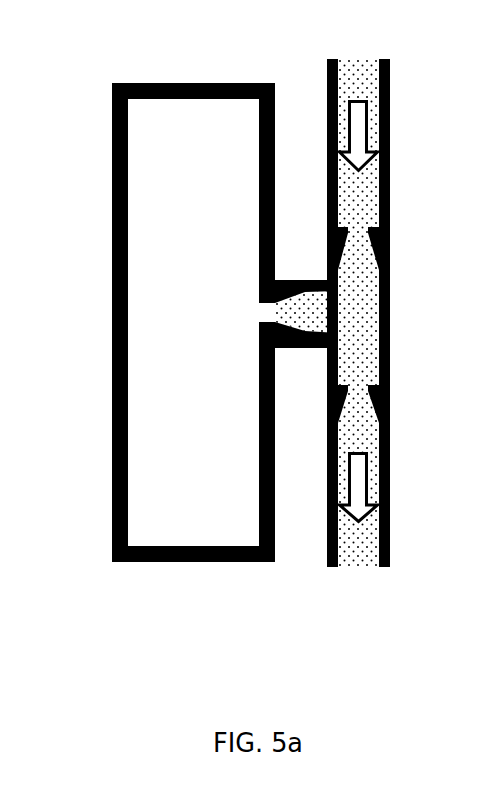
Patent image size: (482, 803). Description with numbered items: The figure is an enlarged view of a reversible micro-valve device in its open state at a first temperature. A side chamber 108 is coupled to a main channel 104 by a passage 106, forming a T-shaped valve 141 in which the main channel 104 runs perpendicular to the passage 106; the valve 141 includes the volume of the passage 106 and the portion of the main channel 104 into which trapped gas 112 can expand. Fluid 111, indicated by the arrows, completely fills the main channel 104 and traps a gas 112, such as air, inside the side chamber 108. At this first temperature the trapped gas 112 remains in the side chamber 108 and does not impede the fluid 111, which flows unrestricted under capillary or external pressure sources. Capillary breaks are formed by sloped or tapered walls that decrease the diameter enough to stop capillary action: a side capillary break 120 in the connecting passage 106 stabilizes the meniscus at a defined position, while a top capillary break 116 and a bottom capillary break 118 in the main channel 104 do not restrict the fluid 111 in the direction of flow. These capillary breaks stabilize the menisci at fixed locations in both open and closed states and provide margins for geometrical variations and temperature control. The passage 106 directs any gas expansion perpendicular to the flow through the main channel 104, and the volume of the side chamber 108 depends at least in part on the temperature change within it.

The main channel 104 is at (340, 77).
The passage 106 is at (310, 348).
The side chamber 108 is at (235, 83).
The fluid 111 is at (363, 118).
The trapped gas 112 is at (140, 283).
The top capillary break 116 is at (389, 227).
The bottom capillary break 118 is at (389, 393).
The side capillary break 120 is at (290, 280).
The valve 141 is at (388, 316).